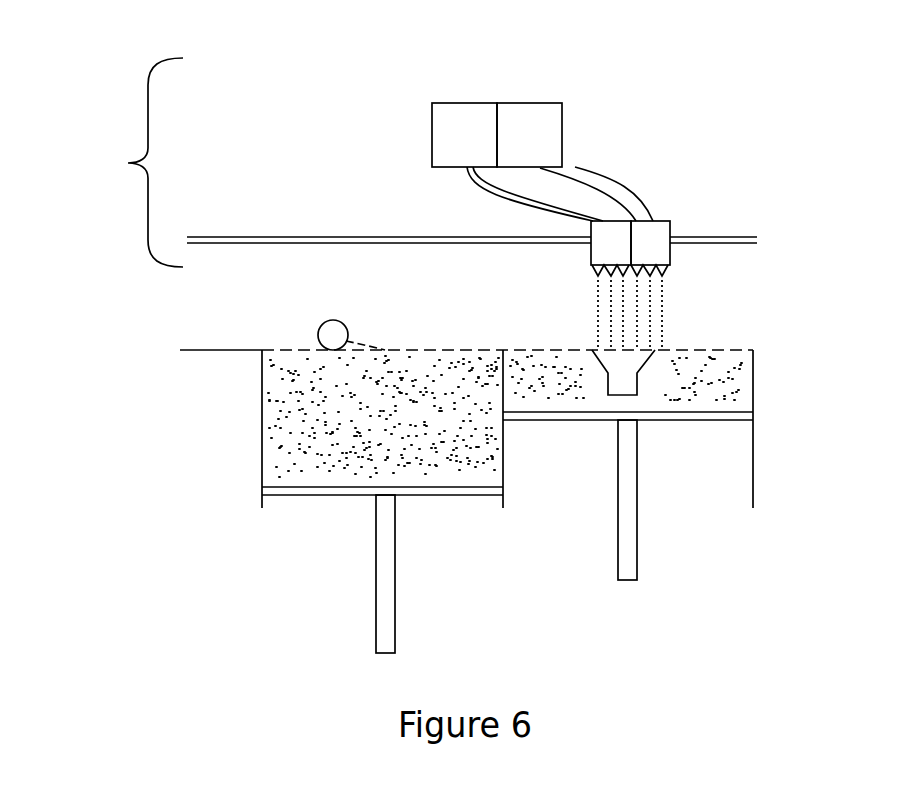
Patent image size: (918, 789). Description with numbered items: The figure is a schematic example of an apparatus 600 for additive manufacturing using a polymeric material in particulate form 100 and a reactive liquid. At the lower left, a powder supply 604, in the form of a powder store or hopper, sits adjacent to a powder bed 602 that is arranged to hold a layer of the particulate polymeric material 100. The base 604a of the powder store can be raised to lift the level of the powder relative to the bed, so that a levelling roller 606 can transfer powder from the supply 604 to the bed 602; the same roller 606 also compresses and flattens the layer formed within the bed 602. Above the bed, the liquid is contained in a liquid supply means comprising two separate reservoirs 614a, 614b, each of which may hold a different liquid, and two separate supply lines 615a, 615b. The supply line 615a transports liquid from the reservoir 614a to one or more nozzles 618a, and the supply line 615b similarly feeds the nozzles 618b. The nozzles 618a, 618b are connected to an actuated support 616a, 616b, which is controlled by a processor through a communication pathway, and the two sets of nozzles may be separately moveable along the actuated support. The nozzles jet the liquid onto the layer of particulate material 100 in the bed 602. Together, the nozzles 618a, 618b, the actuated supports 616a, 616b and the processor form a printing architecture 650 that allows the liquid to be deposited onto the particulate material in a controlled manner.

The apparatus 600 is at (754, 80).
The printing architecture 650 is at (128, 163).
The reservoir 614a is at (453, 110).
The reservoir 614b is at (542, 110).
The supply line 615a is at (490, 195).
The supply line 615b is at (634, 194).
The actuated support 616a is at (592, 248).
The actuated support 616b is at (659, 226).
The nozzles 618a is at (597, 275).
The nozzles 618b is at (665, 274).
The levelling roller 606 is at (320, 326).
The powder supply 604 is at (294, 496).
The base of the powder store 604a is at (376, 602).
The powder bed 602 is at (592, 422).
The polymeric material in particulate form 100 is at (697, 370).